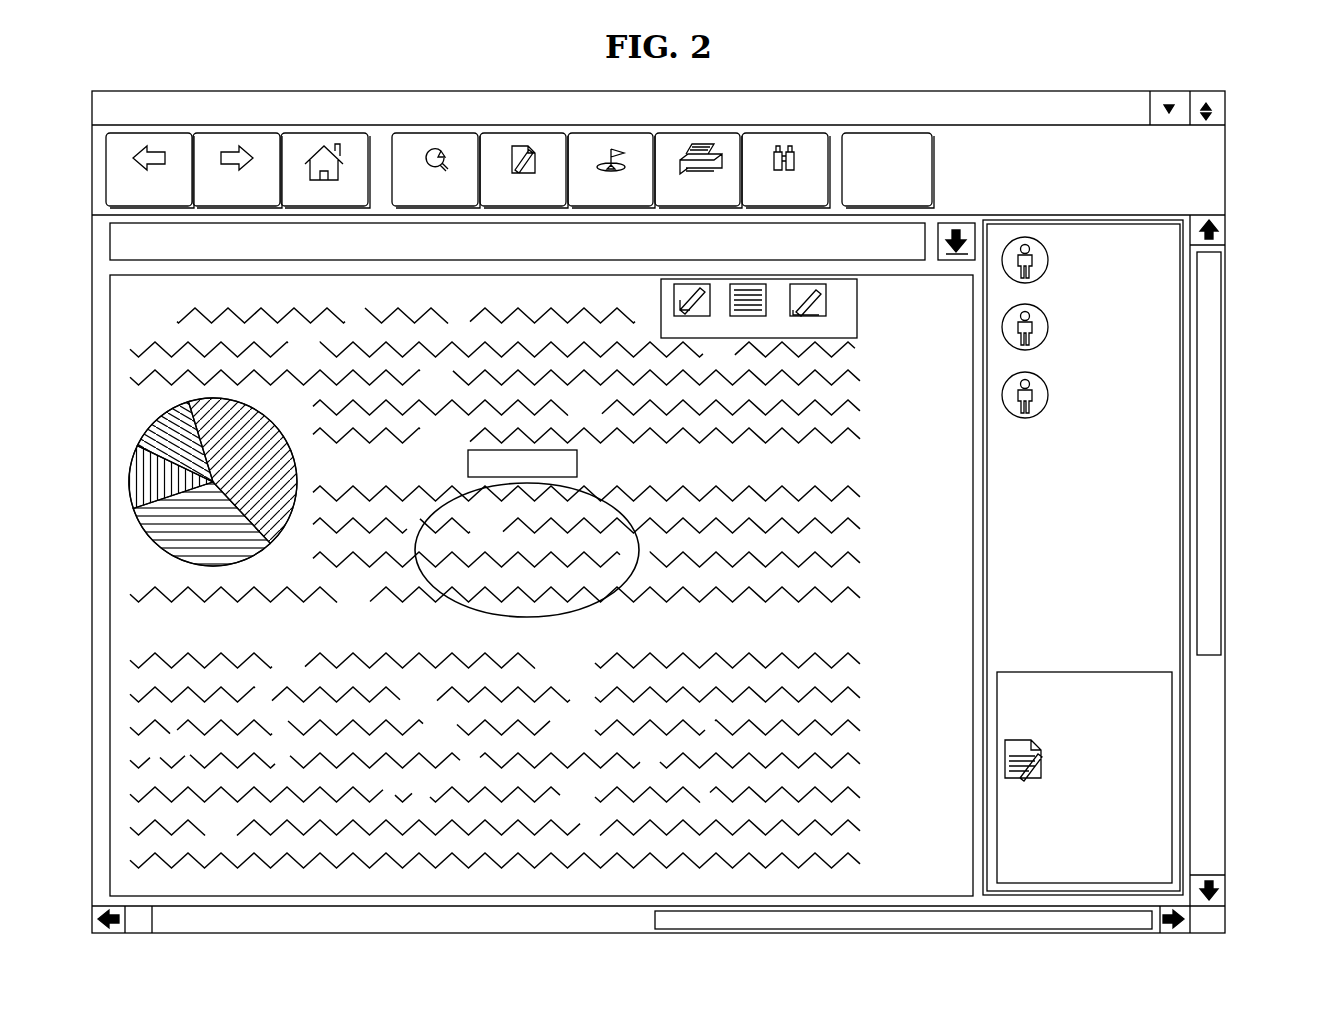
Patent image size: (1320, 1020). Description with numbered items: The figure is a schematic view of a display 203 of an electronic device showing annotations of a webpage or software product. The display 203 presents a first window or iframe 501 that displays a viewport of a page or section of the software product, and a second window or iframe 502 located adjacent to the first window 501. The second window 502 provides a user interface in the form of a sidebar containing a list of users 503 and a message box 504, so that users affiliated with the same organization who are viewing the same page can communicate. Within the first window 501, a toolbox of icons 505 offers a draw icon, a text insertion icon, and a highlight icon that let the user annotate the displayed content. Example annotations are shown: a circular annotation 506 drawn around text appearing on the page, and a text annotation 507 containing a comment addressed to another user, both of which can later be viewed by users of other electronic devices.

The display 203 is at (942, 83).
The first window or iframe 501 is at (595, 280).
The second window or iframe 502 is at (1083, 220).
The list of users 503 is at (1233, 217).
The message box 504 is at (1085, 671).
The toolbox of icons 505 is at (857, 310).
The circular annotation 506 is at (575, 613).
The text annotation 507 is at (577, 463).